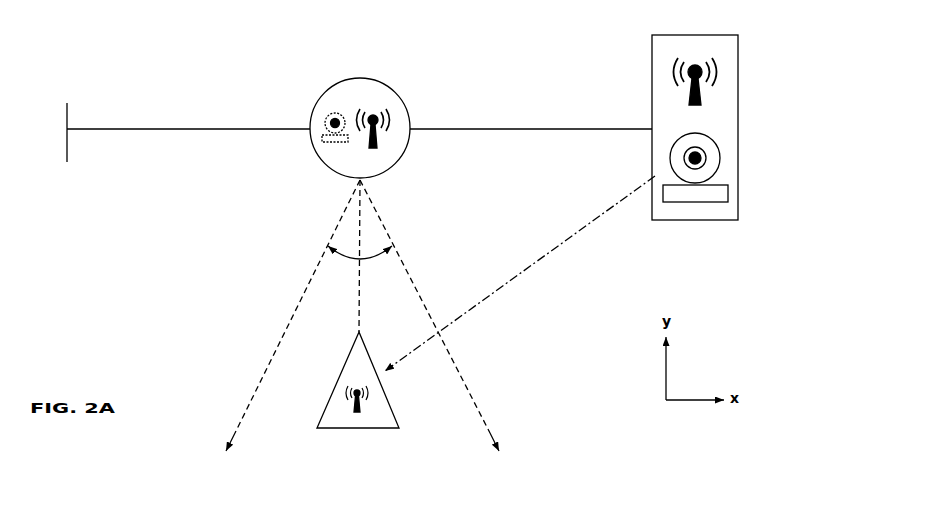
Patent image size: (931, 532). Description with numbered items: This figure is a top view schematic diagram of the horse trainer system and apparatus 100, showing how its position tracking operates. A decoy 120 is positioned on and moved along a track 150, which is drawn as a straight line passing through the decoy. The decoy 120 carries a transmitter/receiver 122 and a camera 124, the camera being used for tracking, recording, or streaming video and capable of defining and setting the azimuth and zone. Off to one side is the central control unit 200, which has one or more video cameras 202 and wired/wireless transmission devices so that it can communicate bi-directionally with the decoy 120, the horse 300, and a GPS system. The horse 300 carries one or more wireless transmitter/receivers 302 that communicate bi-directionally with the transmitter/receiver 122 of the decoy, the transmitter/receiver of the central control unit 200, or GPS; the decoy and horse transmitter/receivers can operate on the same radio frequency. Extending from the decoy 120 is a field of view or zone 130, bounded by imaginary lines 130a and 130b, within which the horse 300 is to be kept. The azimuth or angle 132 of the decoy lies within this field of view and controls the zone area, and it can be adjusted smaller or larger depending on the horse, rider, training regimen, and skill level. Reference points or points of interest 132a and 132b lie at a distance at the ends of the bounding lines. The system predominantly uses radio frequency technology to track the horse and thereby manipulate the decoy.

The horse trainer system and apparatus 100 is at (103, 51).
The track 150 is at (166, 129).
The decoy 120 is at (326, 96).
The transmitter/receiver 122 is at (373, 106).
The camera 124 is at (336, 106).
The central control unit 200 is at (652, 78).
The video camera 202 is at (700, 156).
The field of view 130 is at (306, 328).
The imaginary line 130a is at (262, 388).
The imaginary line 130b is at (464, 381).
The azimuth 132 is at (330, 248).
The reference point 132a is at (229, 451).
The reference point 132b is at (499, 451).
The horse 300 is at (328, 428).
The wireless transmitter/receiver 302 is at (358, 424).